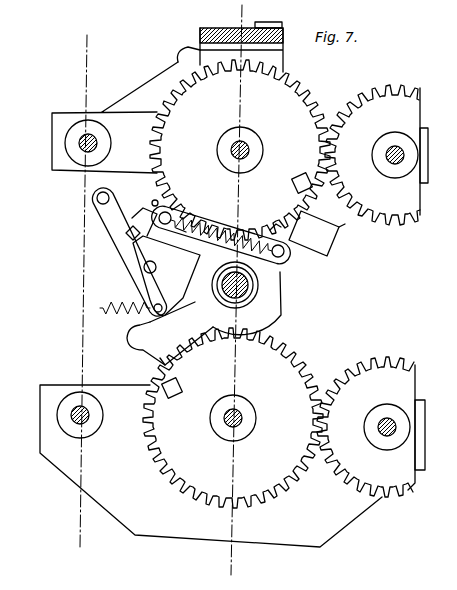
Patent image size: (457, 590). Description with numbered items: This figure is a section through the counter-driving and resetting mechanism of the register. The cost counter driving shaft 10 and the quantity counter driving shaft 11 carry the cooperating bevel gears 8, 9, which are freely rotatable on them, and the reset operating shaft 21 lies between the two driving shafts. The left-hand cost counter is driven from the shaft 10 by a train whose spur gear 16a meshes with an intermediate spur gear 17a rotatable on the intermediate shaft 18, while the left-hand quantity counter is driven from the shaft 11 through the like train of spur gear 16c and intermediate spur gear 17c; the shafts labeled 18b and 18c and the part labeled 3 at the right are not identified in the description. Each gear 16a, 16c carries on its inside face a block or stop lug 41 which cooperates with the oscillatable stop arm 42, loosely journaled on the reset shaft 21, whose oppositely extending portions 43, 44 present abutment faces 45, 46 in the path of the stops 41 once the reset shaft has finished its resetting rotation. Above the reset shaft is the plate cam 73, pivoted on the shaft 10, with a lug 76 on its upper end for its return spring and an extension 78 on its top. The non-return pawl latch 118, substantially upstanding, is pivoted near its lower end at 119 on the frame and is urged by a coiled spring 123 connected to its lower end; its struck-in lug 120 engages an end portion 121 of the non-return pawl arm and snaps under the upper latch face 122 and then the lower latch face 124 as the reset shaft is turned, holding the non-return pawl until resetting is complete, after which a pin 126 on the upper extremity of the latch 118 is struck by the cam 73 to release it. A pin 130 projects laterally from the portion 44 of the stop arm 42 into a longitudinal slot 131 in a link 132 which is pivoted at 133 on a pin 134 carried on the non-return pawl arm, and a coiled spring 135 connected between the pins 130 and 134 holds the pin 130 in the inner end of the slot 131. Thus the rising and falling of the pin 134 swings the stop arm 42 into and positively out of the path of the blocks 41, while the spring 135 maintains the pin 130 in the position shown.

The frame plate 3 is at (422, 404).
The cooperating bevel gear 8 is at (107, 541).
The cooperating bevel gear 9 is at (219, 565).
The cost counter driving shaft 10 is at (244, 147).
The quantity counter driving shaft 11 is at (241, 417).
The spur gear 16a is at (308, 98).
The spur gear 16c is at (301, 375).
The intermediate spur gear 17a is at (403, 97).
The intermediate spur gear 17c is at (407, 355).
The intermediate shaft 18 is at (396, 148).
The shaft 18b is at (86, 424).
The shaft 18c is at (387, 418).
The reset operating shaft 21 is at (226, 294).
The block or stop lug 41 is at (170, 396).
The oscillatable stop arm 42 is at (276, 302).
The oppositely extending portion 43 is at (140, 351).
The oppositely extending portion 44 is at (318, 233).
The abutment face 45 is at (153, 358).
The abutment face 46 is at (333, 224).
The plate cam 73 is at (88, 176).
The lug 76 is at (258, 27).
The extension 78 is at (180, 58).
The non-return pawl latch 118 is at (103, 228).
The pivot 119 is at (150, 300).
The struck-in lug 120 is at (136, 249).
The end portion 121 is at (126, 235).
The upper latch face 122 is at (135, 220).
The coiled spring 123 is at (118, 304).
The lower latch face 124 is at (156, 250).
The pin 126 is at (96, 199).
The pin 130 is at (278, 248).
The slot 131 is at (286, 256).
The link 132 is at (218, 232).
The pivot 133 is at (168, 216).
The pin 134 is at (154, 202).
The coiled spring 135 is at (203, 244).